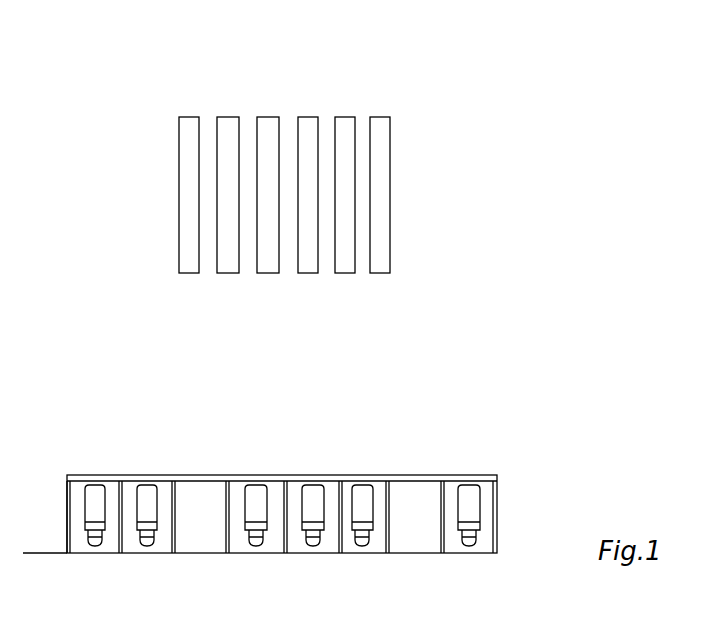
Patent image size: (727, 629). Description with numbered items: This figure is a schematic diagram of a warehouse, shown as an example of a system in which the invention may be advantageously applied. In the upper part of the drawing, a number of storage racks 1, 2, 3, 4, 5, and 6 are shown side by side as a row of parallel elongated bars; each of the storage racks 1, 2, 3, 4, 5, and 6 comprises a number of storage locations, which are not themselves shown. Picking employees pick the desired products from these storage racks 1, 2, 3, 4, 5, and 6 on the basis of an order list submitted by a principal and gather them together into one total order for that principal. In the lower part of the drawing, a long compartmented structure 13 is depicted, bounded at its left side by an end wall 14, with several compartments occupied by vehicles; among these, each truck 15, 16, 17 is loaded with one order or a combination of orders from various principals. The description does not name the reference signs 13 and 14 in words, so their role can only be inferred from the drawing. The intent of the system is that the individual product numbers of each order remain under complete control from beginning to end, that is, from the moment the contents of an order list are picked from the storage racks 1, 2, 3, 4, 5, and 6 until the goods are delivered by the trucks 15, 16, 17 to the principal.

The storage rack 1 is at (178, 173).
The storage rack 2 is at (237, 117).
The storage rack 3 is at (273, 117).
The storage rack 4 is at (313, 116).
The storage rack 5 is at (345, 115).
The storage rack 6 is at (390, 164).
The housing 13 is at (302, 475).
The side wall 14 is at (68, 505).
The truck 15 is at (102, 538).
The truck 16 is at (158, 538).
The truck 17 is at (373, 522).